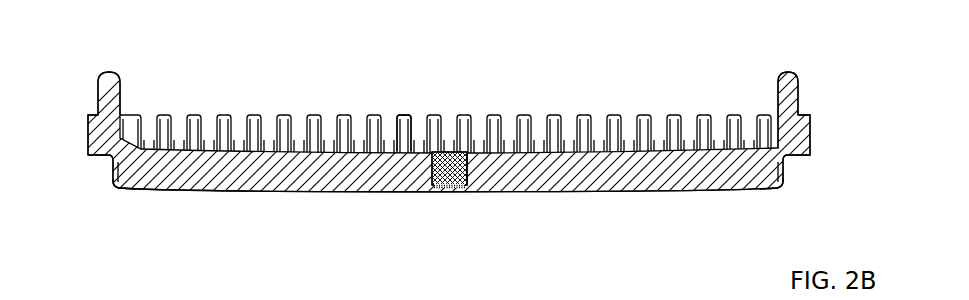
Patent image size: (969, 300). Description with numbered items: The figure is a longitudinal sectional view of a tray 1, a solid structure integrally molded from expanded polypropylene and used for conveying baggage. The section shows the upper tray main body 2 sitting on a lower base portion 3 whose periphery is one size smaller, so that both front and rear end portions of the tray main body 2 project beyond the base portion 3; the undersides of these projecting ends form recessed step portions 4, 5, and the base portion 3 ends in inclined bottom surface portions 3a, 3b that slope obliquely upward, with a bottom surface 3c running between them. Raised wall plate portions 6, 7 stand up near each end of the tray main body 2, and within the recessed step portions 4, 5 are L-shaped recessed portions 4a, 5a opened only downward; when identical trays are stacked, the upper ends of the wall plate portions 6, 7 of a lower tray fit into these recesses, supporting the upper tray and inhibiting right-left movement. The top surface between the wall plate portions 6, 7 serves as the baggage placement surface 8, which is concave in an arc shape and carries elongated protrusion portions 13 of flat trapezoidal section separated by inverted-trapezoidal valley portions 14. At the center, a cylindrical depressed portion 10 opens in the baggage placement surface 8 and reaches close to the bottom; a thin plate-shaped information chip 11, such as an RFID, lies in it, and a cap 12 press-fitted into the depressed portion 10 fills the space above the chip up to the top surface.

The tray 1 is at (472, 126).
The tray main body 2 is at (80, 137).
The base portion 3 is at (561, 202).
The inclined bottom surface portion 3a is at (128, 189).
The inclined bottom surface portion 3b is at (757, 191).
The bottom surface 3c is at (334, 192).
The recessed step portion 4 is at (94, 173).
The L-shaped recessed portion 4a is at (114, 172).
The recessed step portion 5 is at (800, 171).
The L-shaped recessed portion 5a is at (785, 174).
The raised wall plate portion 6 is at (110, 73).
The raised wall plate portion 7 is at (790, 80).
The baggage placement surface 8 is at (404, 140).
The depressed portion 10 is at (468, 174).
The information chip 11 is at (441, 189).
The cap 12 is at (452, 154).
The elongated protrusion portion 13 is at (253, 115).
The valley portion 14 is at (327, 123).